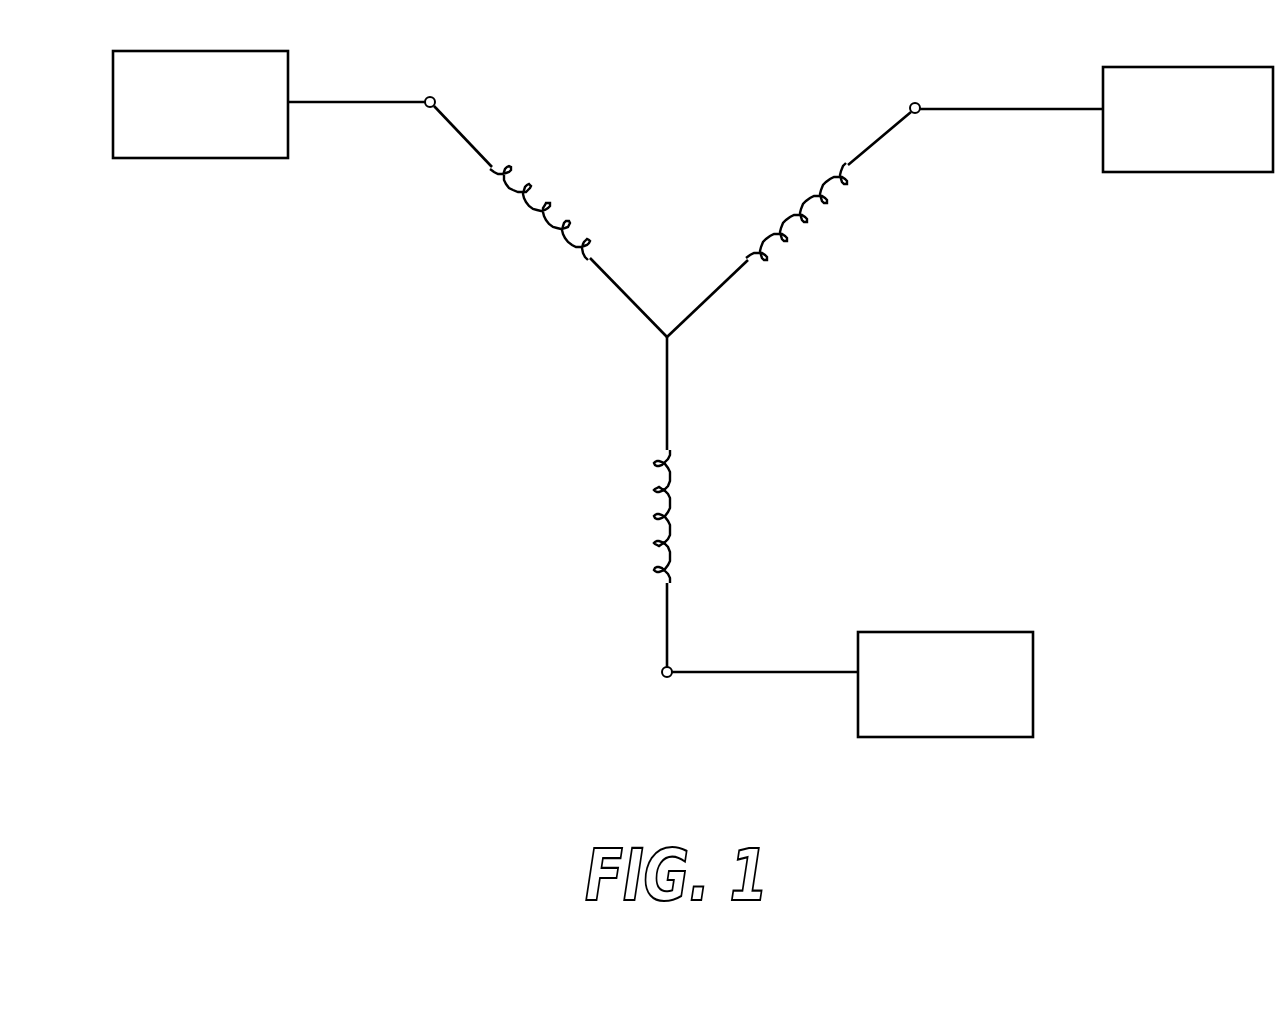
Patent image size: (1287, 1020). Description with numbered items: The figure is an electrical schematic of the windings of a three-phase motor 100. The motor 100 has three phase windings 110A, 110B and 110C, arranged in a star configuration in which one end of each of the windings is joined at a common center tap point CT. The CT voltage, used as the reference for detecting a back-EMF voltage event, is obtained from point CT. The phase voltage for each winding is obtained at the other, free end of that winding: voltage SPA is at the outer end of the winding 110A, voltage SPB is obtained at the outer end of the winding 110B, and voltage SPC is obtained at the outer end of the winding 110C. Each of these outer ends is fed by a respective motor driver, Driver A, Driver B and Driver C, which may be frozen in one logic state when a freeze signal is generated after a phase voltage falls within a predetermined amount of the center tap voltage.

The motor 100 is at (693, 389).
The phase winding 110A is at (531, 193).
The phase winding 110B is at (800, 218).
The phase winding 110C is at (676, 505).
The phase voltage SPA is at (440, 54).
The phase voltage SPB is at (911, 104).
The phase voltage SPC is at (661, 674).
The center tap CT is at (668, 336).